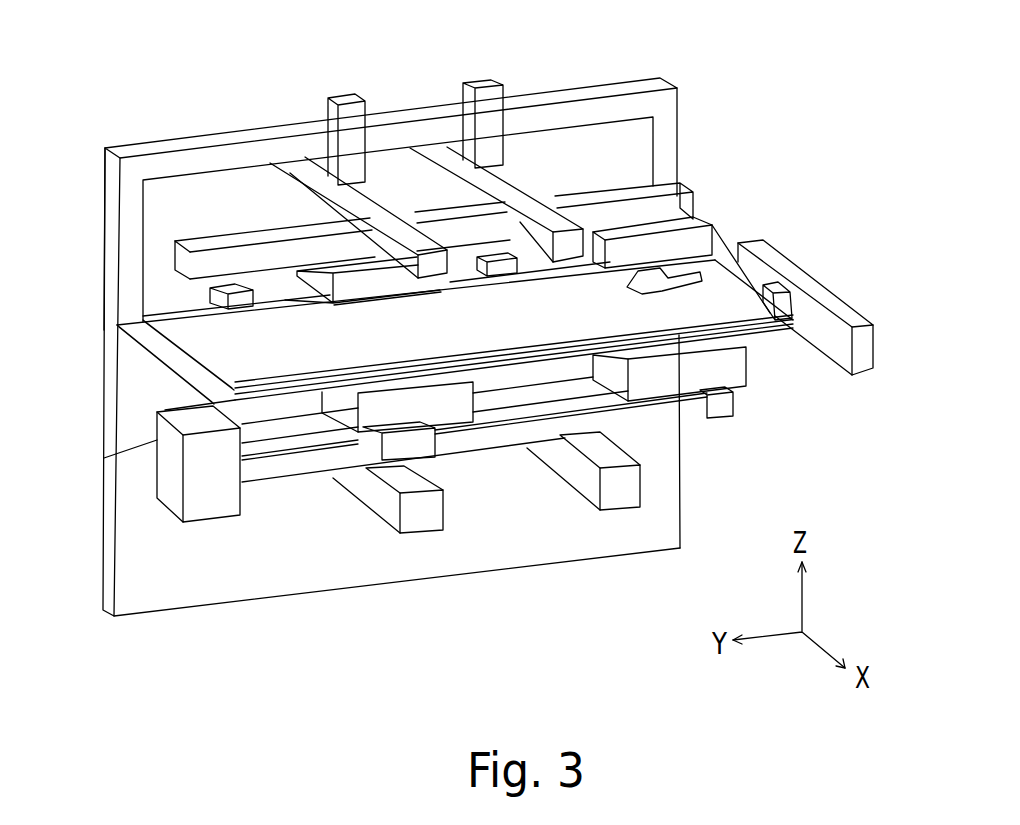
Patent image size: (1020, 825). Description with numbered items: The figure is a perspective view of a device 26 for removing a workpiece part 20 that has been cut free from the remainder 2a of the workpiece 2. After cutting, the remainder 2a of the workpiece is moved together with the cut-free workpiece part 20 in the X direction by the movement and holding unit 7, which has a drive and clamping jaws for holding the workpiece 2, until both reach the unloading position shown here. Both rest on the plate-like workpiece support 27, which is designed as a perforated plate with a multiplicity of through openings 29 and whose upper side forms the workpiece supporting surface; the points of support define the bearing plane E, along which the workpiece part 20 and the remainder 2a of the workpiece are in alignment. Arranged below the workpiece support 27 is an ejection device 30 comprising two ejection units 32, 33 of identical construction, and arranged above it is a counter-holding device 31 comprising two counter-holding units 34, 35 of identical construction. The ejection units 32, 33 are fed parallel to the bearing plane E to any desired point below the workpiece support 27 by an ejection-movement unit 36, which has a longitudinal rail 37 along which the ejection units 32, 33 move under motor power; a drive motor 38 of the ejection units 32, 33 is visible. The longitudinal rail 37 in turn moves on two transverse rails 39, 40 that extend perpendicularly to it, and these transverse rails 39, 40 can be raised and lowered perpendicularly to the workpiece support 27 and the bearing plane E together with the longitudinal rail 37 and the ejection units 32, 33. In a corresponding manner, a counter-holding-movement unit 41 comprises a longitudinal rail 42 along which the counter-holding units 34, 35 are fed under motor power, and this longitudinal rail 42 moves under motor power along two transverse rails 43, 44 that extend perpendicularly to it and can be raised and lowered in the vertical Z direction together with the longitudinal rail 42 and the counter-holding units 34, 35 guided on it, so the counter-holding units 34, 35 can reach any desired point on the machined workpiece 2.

The workpiece 2 is at (180, 333).
The remainder of the workpiece 2a is at (717, 300).
The movement and holding unit 7 is at (828, 276).
The workpiece part 20 is at (672, 262).
The device for removing a workpiece part 26 is at (800, 95).
The workpiece support 27 is at (160, 372).
The through openings 29 is at (165, 438).
The ejection device 30 is at (158, 541).
The counter-holding device 31 is at (233, 202).
The ejection unit 32 is at (363, 428).
The ejection unit 33 is at (733, 373).
The counter-holding unit 34 is at (363, 277).
The counter-holding unit 35 is at (658, 243).
The ejection-movement unit 36 is at (307, 493).
The longitudinal rail 37 is at (637, 430).
The drive motor 38 is at (165, 502).
The transverse rail 39 is at (423, 517).
The transverse rail 40 is at (620, 493).
The counter-holding-movement unit 41 is at (157, 248).
The longitudinal rail 42 is at (619, 215).
The transverse rail 43 is at (380, 207).
The transverse rail 44 is at (520, 190).
The bearing plane E is at (80, 360).